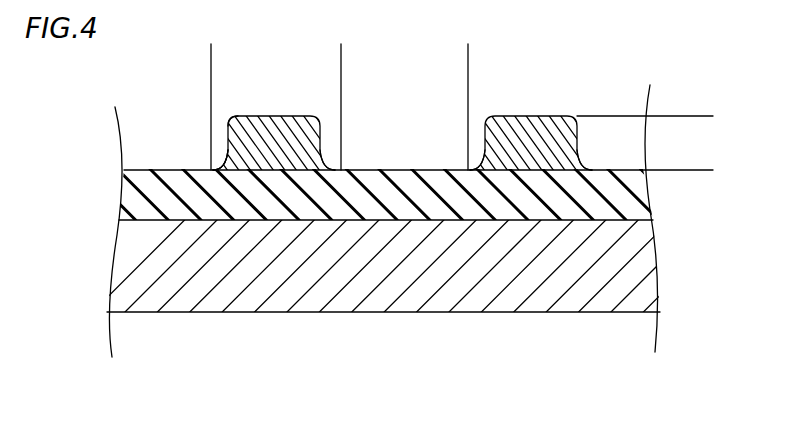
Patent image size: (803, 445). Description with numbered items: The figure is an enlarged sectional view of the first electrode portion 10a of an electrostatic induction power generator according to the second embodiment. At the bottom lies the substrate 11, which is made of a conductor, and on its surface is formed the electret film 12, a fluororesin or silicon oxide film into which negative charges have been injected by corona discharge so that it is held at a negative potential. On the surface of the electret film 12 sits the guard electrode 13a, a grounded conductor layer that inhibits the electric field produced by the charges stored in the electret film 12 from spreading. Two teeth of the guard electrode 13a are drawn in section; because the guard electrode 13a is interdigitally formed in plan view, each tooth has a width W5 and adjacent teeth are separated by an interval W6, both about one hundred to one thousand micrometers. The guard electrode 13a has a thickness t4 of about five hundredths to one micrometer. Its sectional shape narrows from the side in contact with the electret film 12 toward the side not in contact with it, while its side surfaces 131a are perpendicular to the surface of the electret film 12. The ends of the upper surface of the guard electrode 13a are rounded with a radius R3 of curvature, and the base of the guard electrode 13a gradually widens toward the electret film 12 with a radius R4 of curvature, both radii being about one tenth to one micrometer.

The first electrode portion 10a is at (617, 83).
The substrate 11 is at (125, 280).
The electret film 12 is at (137, 199).
The guard electrode 13a is at (267, 137).
The side surfaces 131a is at (321, 140).
The width of teeth W5 is at (341, 73).
The interval between teeth W6 is at (468, 73).
The thickness of guard electrode t4 is at (690, 116).
The radius of curvature of rounded upper ends R3 is at (218, 128).
The radius of curvature of widened base R4 is at (217, 142).